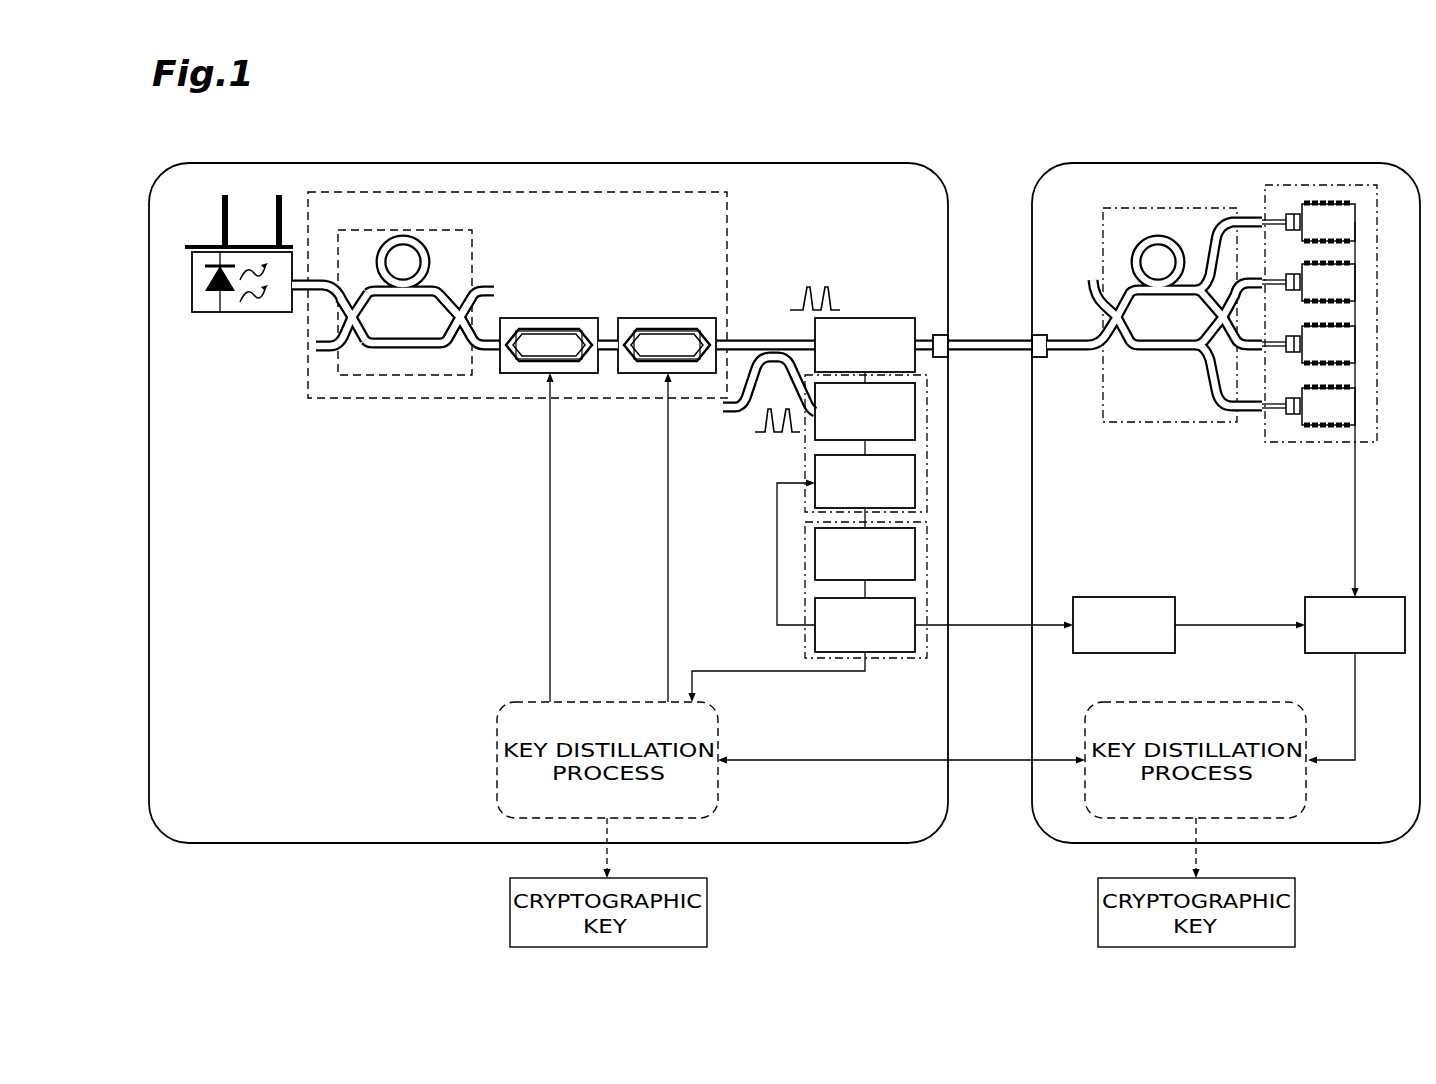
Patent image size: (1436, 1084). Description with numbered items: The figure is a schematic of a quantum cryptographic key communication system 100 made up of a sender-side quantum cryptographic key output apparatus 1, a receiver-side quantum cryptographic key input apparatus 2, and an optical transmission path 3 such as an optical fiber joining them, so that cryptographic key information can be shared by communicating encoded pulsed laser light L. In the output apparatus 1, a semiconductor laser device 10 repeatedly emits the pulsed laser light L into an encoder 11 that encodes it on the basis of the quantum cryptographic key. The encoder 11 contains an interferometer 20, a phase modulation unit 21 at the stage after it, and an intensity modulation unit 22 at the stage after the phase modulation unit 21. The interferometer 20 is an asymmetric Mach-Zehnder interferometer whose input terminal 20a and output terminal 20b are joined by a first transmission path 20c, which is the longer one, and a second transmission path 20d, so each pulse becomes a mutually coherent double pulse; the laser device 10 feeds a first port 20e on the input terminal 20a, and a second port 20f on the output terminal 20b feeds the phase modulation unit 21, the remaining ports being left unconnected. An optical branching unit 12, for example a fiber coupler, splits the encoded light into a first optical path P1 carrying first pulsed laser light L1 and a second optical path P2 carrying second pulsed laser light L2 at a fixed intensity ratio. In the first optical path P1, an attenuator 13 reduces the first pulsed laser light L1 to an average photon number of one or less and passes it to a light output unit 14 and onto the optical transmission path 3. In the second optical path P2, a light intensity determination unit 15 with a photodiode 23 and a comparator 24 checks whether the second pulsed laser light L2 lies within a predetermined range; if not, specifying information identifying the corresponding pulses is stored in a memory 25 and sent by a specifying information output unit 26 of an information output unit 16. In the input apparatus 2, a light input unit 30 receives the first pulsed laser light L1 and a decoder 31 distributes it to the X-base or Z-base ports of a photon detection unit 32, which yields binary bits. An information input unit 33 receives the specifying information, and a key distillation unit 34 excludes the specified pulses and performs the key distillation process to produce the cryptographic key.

The quantum cryptographic key communication system 100 is at (784, 465).
The quantum cryptographic key output apparatus 1 is at (742, 160).
The quantum cryptographic key input apparatus 2 is at (1092, 160).
The optical transmission path 3 is at (992, 340).
The semiconductor laser device 10 is at (207, 312).
The encoder 11 is at (488, 330).
The optical branching unit 12 is at (768, 340).
The attenuator 13 is at (868, 318).
The light output unit 14 is at (938, 335).
The light intensity determination unit 15 is at (903, 438).
The information output unit 16 is at (903, 585).
The interferometer 20 is at (399, 331).
The input terminal 20a is at (350, 326).
The output terminal 20b is at (455, 326).
The first transmission path 20c is at (432, 270).
The second transmission path 20d is at (405, 350).
The first port 20e is at (322, 296).
The second port 20f is at (493, 352).
The phase modulation unit 21 is at (568, 318).
The intensity modulation unit 22 is at (672, 318).
The photodiode 23 is at (915, 410).
The comparator 24 is at (915, 478).
The memory 25 is at (915, 550).
The specifying information output unit 26 is at (915, 605).
The light input unit 30 is at (1042, 335).
The decoder 31 is at (1145, 424).
The photon detection unit 32 is at (1282, 444).
The information input unit 33 is at (1150, 597).
The key distillation unit 34 is at (1325, 597).
The pulsed laser light L is at (230, 222).
The first pulsed laser light L1 is at (816, 280).
The second pulsed laser light L2 is at (778, 448).
The first optical path P1 is at (800, 338).
The second optical path P2 is at (783, 388).